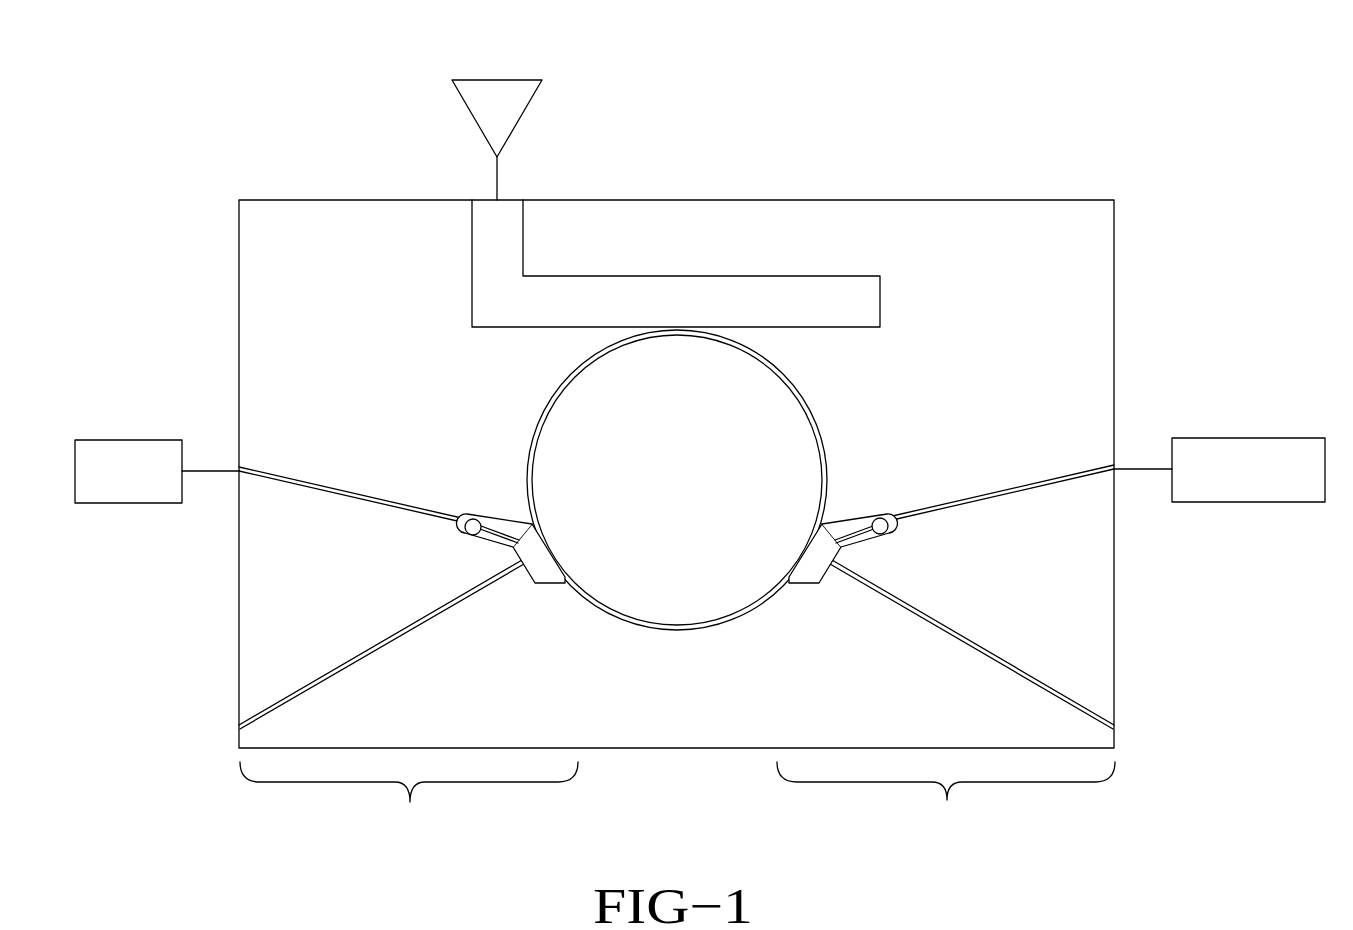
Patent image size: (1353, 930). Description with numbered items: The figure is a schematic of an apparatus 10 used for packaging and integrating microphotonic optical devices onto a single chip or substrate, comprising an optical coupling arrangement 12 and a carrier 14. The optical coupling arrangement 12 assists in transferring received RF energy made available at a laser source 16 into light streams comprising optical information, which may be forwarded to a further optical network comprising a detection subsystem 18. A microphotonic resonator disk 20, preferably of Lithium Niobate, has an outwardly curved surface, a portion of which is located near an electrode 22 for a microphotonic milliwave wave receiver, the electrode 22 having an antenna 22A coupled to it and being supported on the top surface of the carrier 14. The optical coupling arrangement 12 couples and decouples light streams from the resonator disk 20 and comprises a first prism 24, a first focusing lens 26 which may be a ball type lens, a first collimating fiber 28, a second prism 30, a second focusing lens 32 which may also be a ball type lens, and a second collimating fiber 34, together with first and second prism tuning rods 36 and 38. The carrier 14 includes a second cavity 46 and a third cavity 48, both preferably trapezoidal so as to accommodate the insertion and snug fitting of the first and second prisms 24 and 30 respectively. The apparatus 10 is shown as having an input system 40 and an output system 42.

The apparatus 10 is at (370, 156).
The optical coupling arrangement 12 is at (756, 480).
The carrier 14 is at (1114, 265).
The laser source 16 is at (125, 440).
The detection subsystem 18 is at (1235, 438).
The microphotonic resonator disk 20 is at (775, 457).
The electrode 22 is at (830, 276).
The antenna 22A is at (497, 80).
The first prism 24 is at (543, 568).
The first focusing lens 26 is at (464, 518).
The first collimating fiber 28 is at (362, 498).
The second prism 30 is at (812, 568).
The second focusing lens 32 is at (882, 518).
The second collimating fiber 34 is at (995, 497).
The first prism tuning rod 36 is at (360, 662).
The second prism tuning rod 38 is at (997, 661).
The input system 40 is at (395, 857).
The output system 42 is at (961, 857).
The second cavity 46 is at (530, 523).
The third cavity 48 is at (817, 572).